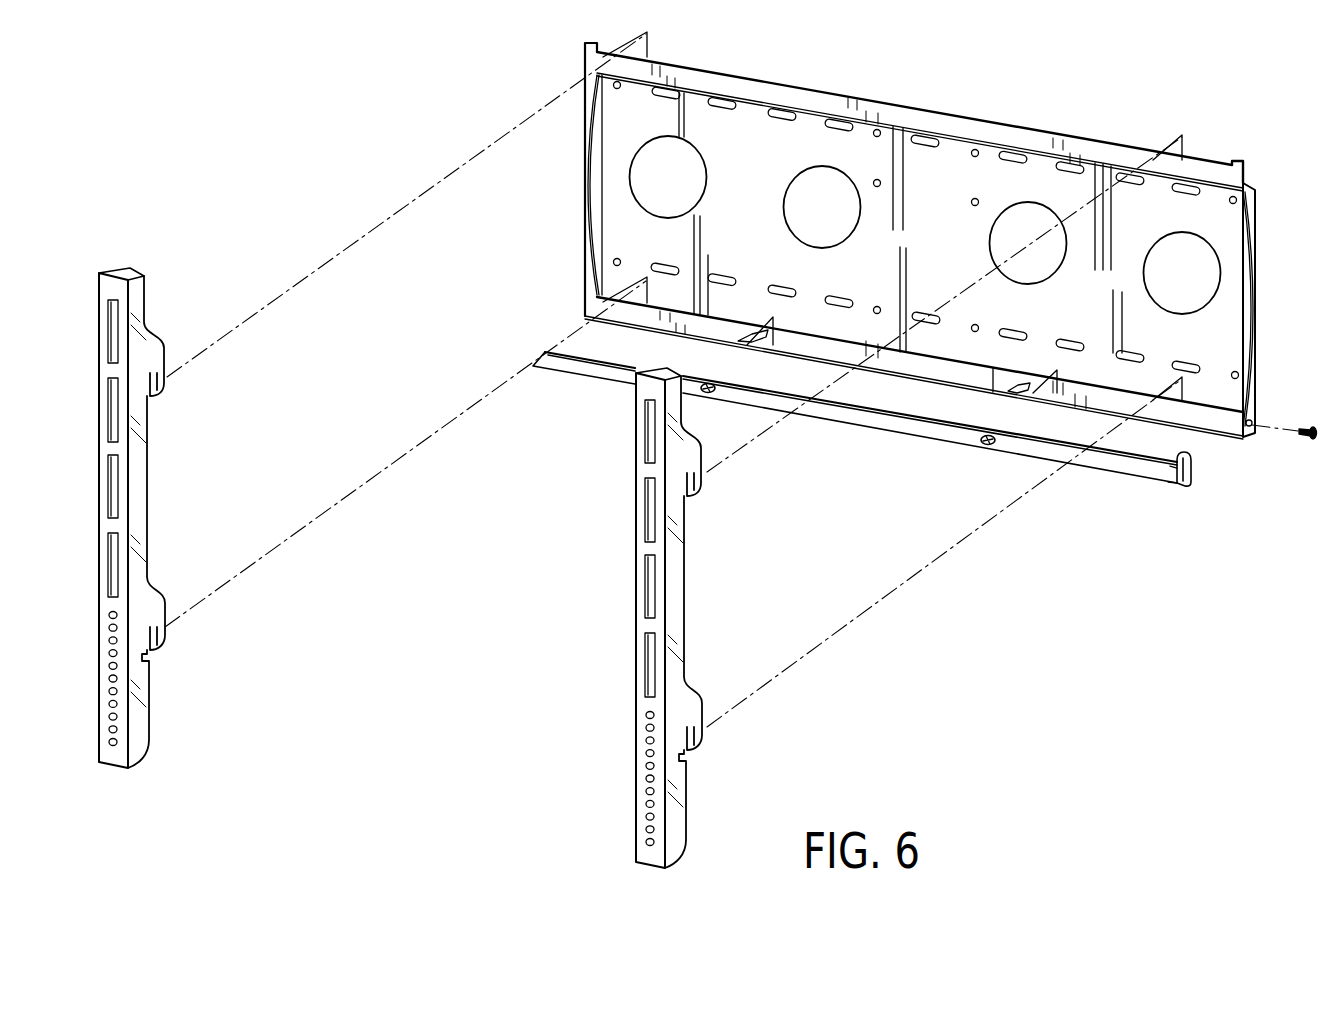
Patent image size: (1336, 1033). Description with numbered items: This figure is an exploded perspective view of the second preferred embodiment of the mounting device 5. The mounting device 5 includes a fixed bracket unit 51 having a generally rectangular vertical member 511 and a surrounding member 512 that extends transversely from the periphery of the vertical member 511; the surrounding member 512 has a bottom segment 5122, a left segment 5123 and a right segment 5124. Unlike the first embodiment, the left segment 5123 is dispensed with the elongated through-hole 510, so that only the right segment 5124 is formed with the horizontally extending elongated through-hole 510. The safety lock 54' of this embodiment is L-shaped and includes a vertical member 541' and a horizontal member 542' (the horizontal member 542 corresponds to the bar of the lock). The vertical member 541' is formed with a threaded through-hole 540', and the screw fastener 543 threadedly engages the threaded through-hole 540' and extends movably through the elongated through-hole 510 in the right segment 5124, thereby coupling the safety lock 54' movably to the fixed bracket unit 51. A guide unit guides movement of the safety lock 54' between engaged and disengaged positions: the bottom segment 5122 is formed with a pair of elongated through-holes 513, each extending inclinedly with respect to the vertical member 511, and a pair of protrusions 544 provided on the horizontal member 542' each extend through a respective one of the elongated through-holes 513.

The mounting device 5 is at (328, 123).
The fixed bracket unit 51 is at (570, 188).
The elongated through-hole 510 is at (1253, 421).
The vertical member 511 is at (933, 182).
The surrounding member 512 is at (1253, 205).
The bottom segment 5122 is at (1003, 392).
The left segment 5123 is at (598, 126).
The right segment 5124 is at (1248, 368).
The elongated through-hole 513 is at (748, 335).
The safety lock 54' is at (897, 475).
The threaded through-hole 540' is at (1219, 463).
The vertical member 541' is at (1206, 499).
The horizontal member 542 is at (861, 420).
The horizontal member 542' is at (855, 454).
The screw fastener 543 is at (1306, 440).
The protrusion 544 is at (712, 393).